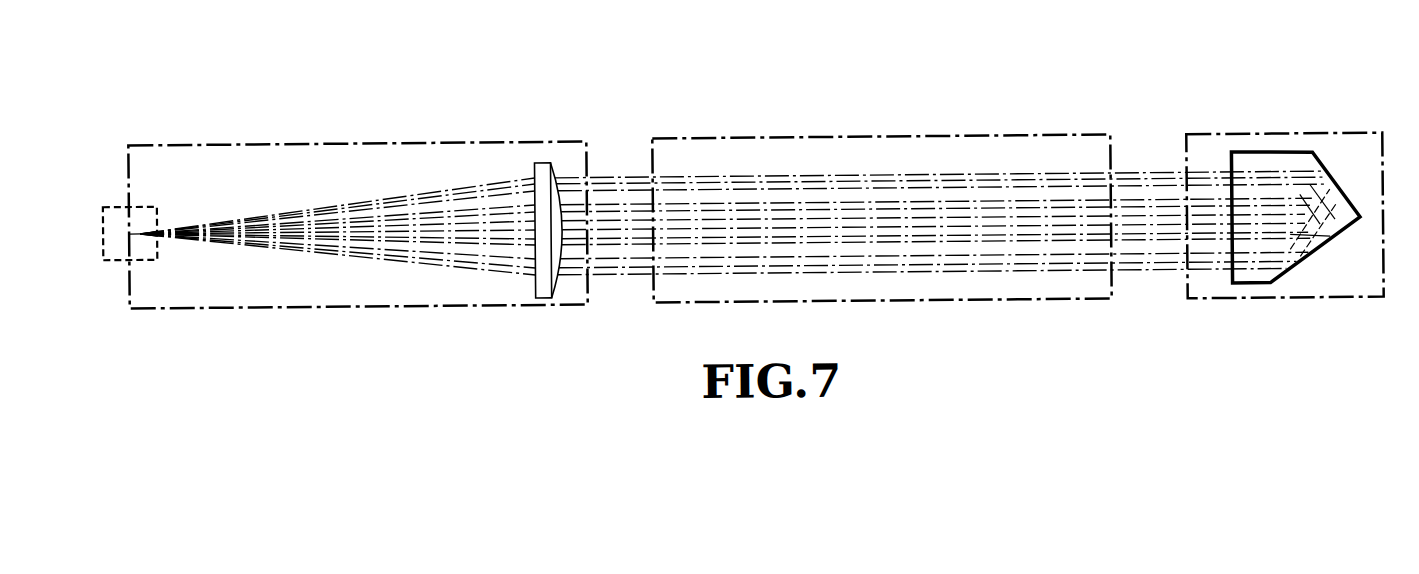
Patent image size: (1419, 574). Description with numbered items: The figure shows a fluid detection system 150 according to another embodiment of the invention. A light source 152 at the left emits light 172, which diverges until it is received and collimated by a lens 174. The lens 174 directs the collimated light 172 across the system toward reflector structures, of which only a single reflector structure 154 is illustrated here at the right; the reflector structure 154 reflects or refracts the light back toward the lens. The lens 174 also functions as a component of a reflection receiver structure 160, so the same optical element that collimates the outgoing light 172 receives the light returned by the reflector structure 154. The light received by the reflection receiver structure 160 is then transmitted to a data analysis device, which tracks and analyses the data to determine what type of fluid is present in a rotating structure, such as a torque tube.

The fluid detection system 150 is at (460, 118).
The light source 152 is at (115, 256).
The reflector structure 154 is at (1281, 146).
The reflection receiver structure 160 is at (540, 162).
The light 172 is at (360, 256).
The lens 174 is at (540, 282).